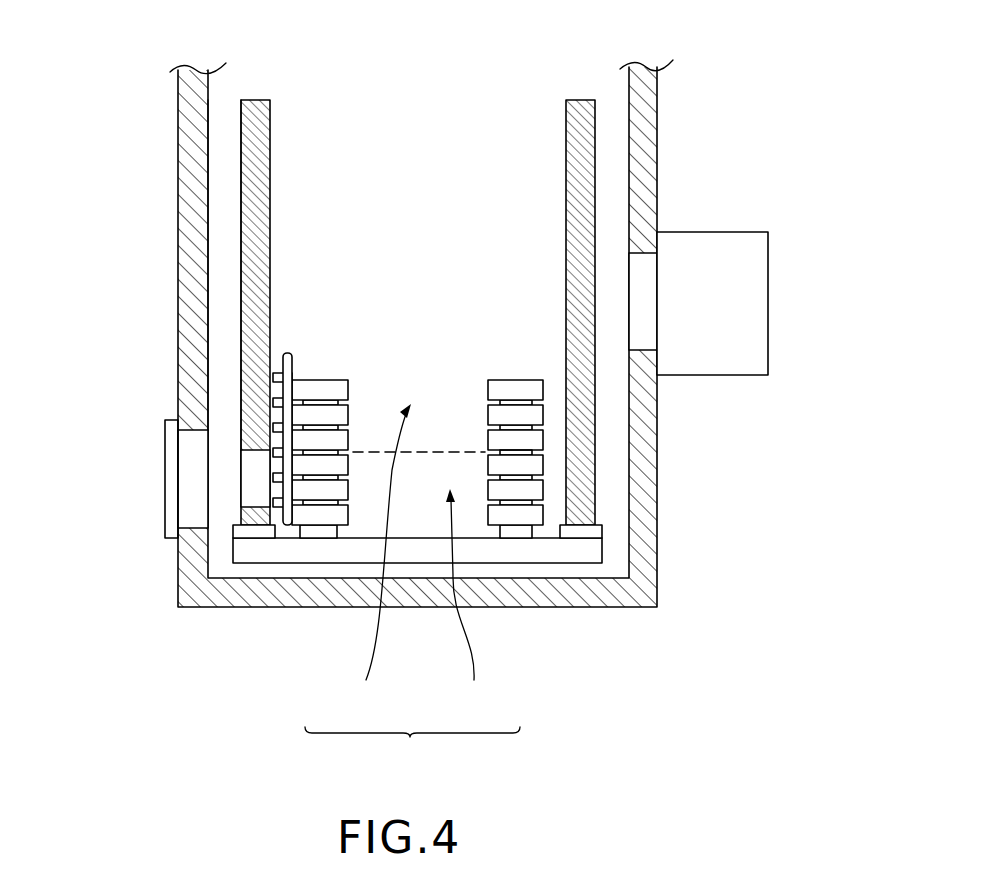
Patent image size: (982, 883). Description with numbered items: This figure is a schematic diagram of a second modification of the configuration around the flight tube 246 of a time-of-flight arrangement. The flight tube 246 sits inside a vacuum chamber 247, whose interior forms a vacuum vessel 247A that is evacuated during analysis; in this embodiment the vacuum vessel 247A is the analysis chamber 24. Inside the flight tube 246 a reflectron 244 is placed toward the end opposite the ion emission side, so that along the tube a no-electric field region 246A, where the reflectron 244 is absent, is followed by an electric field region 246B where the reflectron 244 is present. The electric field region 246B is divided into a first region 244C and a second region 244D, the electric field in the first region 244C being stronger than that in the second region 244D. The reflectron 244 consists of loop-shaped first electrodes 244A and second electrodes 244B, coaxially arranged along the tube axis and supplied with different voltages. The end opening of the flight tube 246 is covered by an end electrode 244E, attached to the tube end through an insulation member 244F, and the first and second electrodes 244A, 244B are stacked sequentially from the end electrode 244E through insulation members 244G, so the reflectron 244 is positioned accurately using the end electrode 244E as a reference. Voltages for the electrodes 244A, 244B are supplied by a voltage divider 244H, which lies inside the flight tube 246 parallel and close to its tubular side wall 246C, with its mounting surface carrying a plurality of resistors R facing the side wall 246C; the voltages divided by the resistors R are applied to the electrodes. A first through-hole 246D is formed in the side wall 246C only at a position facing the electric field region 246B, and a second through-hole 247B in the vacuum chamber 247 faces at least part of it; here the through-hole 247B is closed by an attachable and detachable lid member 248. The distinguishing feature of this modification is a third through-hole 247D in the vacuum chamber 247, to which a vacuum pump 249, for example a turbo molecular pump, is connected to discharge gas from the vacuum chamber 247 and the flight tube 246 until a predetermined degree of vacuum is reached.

The analysis chamber 24 is at (353, 333).
The vacuum chamber 247 is at (178, 163).
The vacuum vessel 247A is at (226, 123).
The through-hole (second through-hole) 247B is at (187, 446).
The through-hole (third through-hole) 247D is at (632, 296).
The vacuum pump 249 is at (720, 232).
The lid member 248 is at (168, 420).
The flight tube 246 is at (317, 312).
The no-electric field region 246A is at (466, 228).
The electric field region 246B is at (412, 753).
The side wall 246C is at (230, 224).
The through-hole (first through-hole) 246D is at (247, 481).
The reflectron 244 is at (595, 451).
The first electrode 244A is at (552, 378).
The second electrode 244B is at (552, 455).
The first region (first stage) 244C is at (358, 559).
The second region (second stage) 244D is at (473, 601).
The end electrode 244E is at (567, 552).
The insulation member 244F is at (603, 532).
The insulation member 244G is at (318, 532).
The voltage divider 244H is at (293, 358).
The resistor R is at (270, 496).